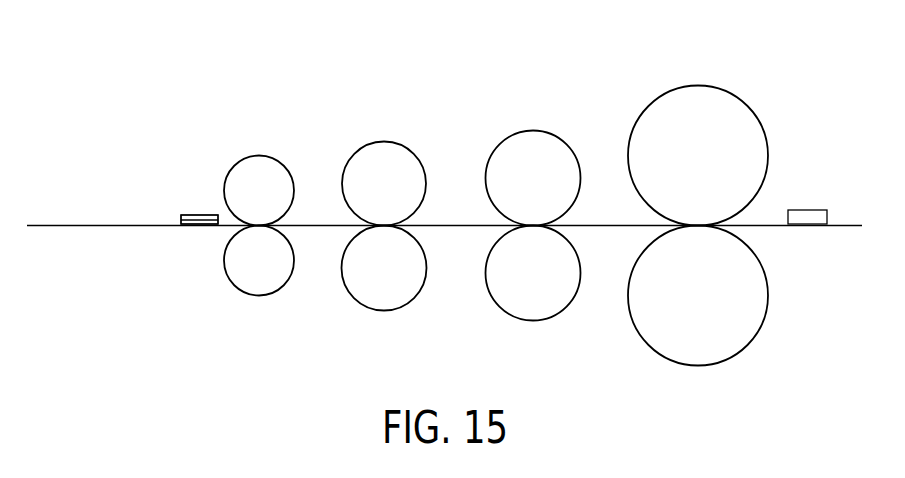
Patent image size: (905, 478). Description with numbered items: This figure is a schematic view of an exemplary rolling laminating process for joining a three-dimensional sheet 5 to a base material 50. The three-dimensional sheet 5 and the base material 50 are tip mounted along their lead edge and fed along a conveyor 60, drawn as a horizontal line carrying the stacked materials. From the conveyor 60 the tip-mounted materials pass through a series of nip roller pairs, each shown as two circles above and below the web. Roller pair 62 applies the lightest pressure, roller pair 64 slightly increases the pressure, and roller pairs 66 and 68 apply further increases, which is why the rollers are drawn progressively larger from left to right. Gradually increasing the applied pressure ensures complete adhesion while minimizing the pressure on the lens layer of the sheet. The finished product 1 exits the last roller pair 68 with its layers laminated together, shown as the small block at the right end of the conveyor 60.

The product 1 is at (808, 210).
The three-dimensional sheet 5 is at (198, 215).
The base material 50 is at (198, 226).
The conveyor 60 is at (87, 227).
The roller pair 62 is at (262, 150).
The roller pair 64 is at (387, 138).
The roller pair 66 is at (537, 128).
The roller pair 68 is at (700, 83).